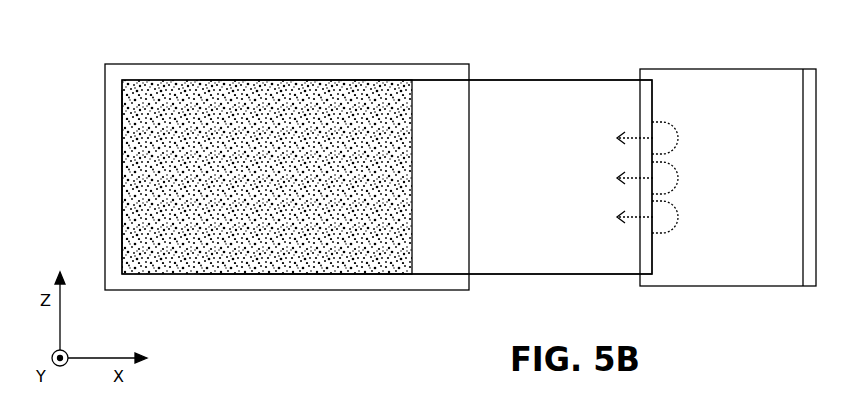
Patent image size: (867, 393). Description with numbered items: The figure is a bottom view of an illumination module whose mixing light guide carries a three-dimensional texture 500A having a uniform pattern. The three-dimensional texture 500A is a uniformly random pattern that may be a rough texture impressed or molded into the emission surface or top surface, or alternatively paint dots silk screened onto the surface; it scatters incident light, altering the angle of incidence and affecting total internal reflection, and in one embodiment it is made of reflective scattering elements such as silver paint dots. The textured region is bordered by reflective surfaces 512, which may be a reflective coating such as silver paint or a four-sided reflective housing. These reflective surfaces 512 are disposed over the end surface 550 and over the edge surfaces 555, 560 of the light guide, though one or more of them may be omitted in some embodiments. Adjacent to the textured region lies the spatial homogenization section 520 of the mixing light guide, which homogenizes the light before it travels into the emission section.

The reflective surfaces 512 is at (105, 98).
The 3D texture 500A is at (286, 184).
The end surface 550 is at (122, 152).
The edge surface 555 is at (352, 80).
The edge surface 560 is at (301, 274).
The spatial homogenization section 520 is at (580, 205).